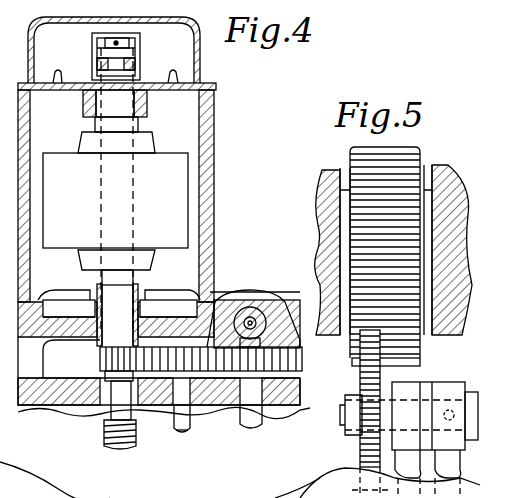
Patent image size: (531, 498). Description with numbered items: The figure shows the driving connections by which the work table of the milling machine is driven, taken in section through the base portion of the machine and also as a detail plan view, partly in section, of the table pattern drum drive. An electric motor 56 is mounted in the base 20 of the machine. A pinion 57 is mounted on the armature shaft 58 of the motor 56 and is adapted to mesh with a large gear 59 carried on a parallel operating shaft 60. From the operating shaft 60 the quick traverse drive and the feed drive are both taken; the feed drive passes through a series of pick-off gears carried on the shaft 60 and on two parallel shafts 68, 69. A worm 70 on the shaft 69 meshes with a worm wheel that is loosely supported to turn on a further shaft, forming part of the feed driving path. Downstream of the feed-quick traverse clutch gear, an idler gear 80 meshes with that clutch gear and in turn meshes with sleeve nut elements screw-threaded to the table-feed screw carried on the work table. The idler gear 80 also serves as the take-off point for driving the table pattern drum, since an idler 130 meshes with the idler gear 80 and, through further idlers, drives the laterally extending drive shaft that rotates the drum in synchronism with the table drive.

In FIG. 4, the base 20 is at (215, 158).
In FIG. 5, the base 20 is at (455, 190).
In FIG. 4, the electric motor 56 is at (84, 210).
In FIG. 4, the pinion 57 is at (100, 360).
In FIG. 4, the armature shaft 58 is at (113, 310).
In FIG. 4, the large gear 59 is at (248, 300).
In FIG. 4, the operating shaft 60 is at (255, 402).
In FIG. 4, the parallel shaft 68 is at (186, 423).
In FIG. 4, the parallel shaft 69 is at (123, 415).
In FIG. 4, the worm 70 is at (100, 442).
In FIG. 5, the idler gear 80 is at (350, 162).
In FIG. 5, the idler 130 is at (412, 372).